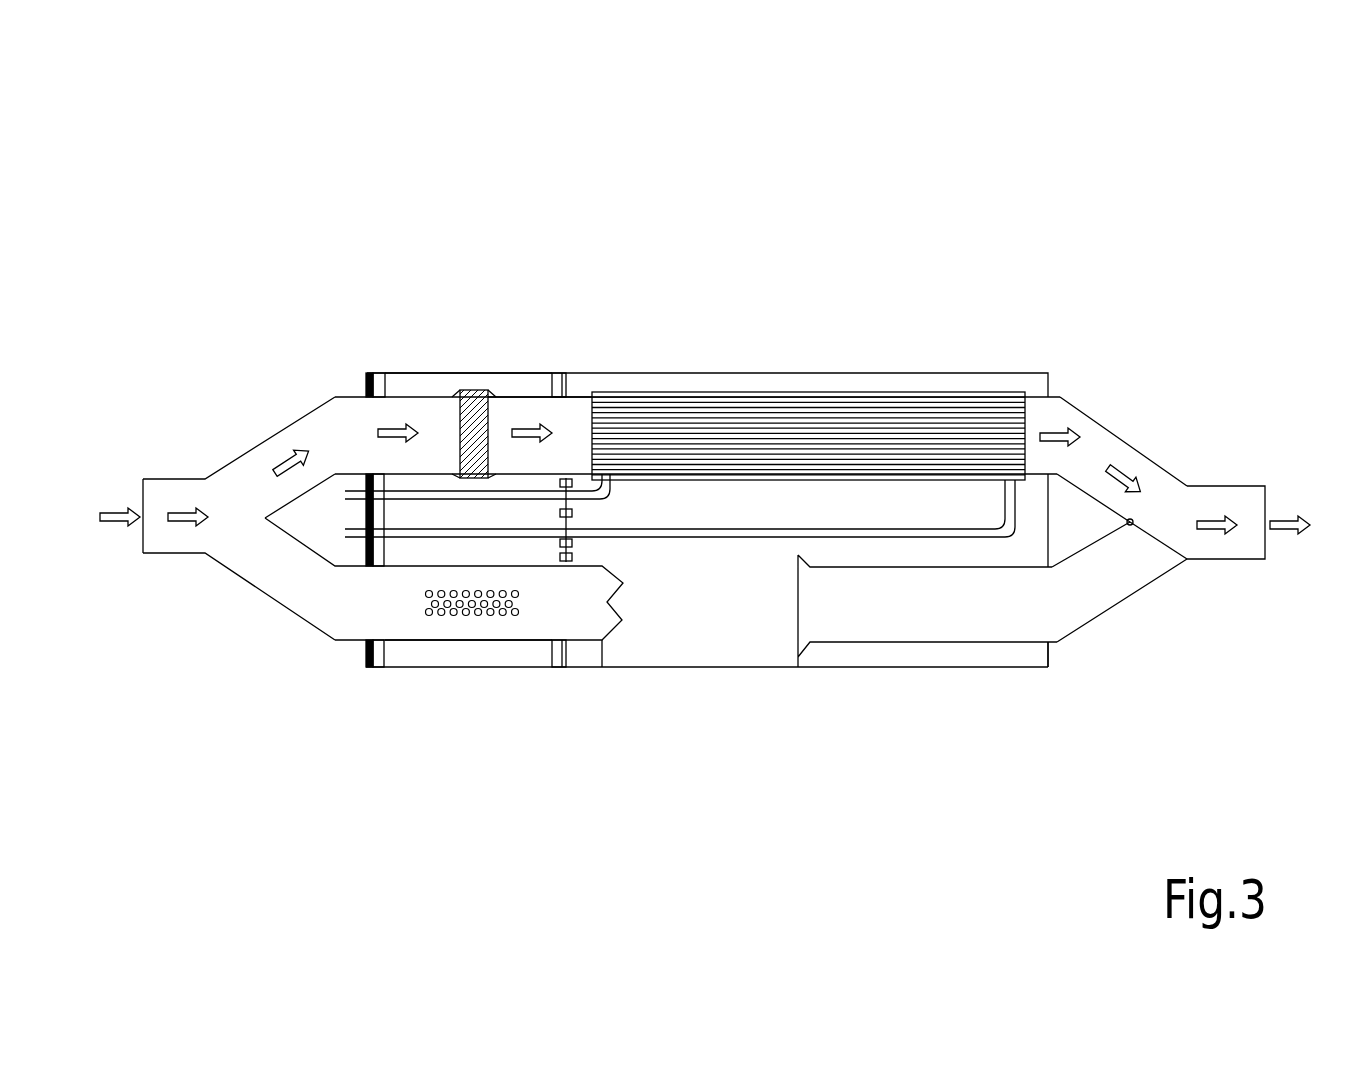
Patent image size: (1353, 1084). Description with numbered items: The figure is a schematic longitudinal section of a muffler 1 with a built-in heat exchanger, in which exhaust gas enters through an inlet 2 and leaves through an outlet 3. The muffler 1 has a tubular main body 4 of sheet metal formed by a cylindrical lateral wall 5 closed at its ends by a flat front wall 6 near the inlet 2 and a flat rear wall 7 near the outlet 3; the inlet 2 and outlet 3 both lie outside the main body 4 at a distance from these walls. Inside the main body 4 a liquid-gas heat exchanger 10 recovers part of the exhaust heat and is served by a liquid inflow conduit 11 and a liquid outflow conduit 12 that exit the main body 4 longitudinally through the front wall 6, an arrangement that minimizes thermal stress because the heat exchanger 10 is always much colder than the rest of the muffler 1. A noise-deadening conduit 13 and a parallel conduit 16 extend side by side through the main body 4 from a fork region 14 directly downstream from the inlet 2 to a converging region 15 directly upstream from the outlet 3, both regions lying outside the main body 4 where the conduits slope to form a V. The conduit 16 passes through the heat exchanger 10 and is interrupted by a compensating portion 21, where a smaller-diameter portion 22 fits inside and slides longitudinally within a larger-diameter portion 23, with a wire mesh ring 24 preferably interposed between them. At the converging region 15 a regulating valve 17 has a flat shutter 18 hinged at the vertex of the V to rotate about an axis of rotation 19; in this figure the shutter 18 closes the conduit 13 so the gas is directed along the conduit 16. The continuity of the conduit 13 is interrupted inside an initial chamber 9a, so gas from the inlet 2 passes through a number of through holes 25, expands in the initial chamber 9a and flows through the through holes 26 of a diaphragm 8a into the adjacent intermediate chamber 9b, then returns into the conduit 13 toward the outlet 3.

The muffler 1 is at (208, 181).
The inlet 2 is at (138, 536).
The outlet 3 is at (1271, 550).
The tubular main body 4 is at (891, 786).
The cylindrical lateral wall 5 is at (722, 669).
The flat front wall 6 is at (364, 653).
The flat rear wall 7 is at (1053, 386).
The diaphragm 8a is at (572, 503).
The initial chamber 9a is at (495, 652).
The intermediate chamber 9b is at (763, 642).
The liquid-gas heat exchanger 10 is at (790, 410).
The liquid inflow conduit 11 is at (353, 531).
The liquid outflow conduit 12 is at (353, 494).
The noise-deadening conduit 13 is at (317, 592).
The fork region 14 is at (261, 408).
The converging region 15 is at (1152, 420).
The conduit 16 is at (333, 428).
The regulating valve 17 is at (1169, 604).
The flat shutter 18 is at (1158, 543).
The axis of rotation 19 is at (1129, 528).
The compensating portion 21 is at (474, 352).
The smaller-diameter portion 22 is at (518, 396).
The larger-diameter portion 23 is at (463, 388).
The wire mesh ring 24 is at (488, 390).
The through holes 25 is at (466, 604).
The through holes 26 is at (549, 546).